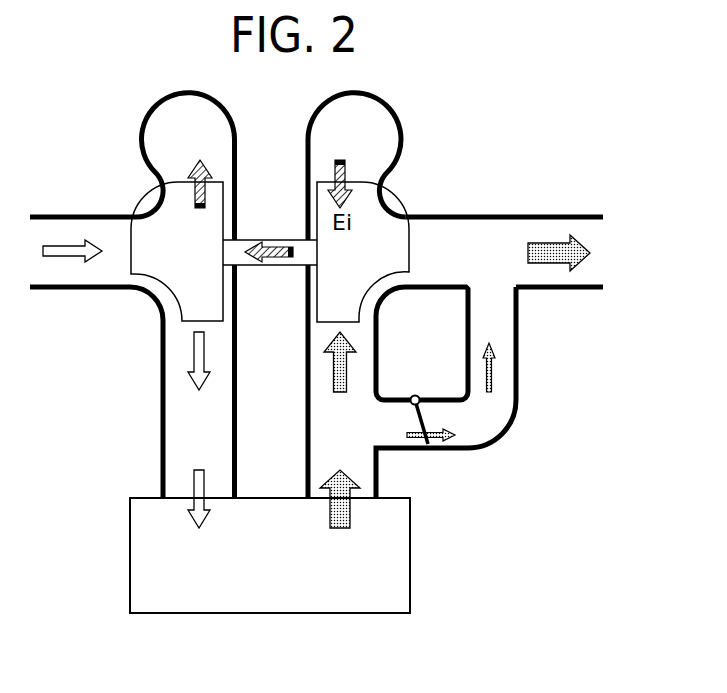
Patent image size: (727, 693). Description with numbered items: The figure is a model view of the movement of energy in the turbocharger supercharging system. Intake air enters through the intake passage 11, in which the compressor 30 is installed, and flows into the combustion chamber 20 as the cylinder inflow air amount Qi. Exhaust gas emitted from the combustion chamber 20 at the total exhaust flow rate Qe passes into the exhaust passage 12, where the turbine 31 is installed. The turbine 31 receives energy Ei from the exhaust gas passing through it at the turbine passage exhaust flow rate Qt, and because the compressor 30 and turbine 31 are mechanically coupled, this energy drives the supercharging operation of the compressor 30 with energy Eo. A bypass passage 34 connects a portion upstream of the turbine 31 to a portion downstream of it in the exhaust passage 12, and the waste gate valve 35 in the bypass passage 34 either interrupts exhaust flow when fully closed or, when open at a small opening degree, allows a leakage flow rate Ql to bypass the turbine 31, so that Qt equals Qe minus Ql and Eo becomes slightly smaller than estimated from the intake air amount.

The intake passage 11 is at (160, 396).
The exhaust passage 12 is at (537, 216).
The combustion chamber 20 is at (410, 556).
The compressor 30 is at (158, 296).
The turbine 31 is at (386, 303).
The bypass passage 34 is at (516, 338).
The waste gate valve 35 is at (411, 416).